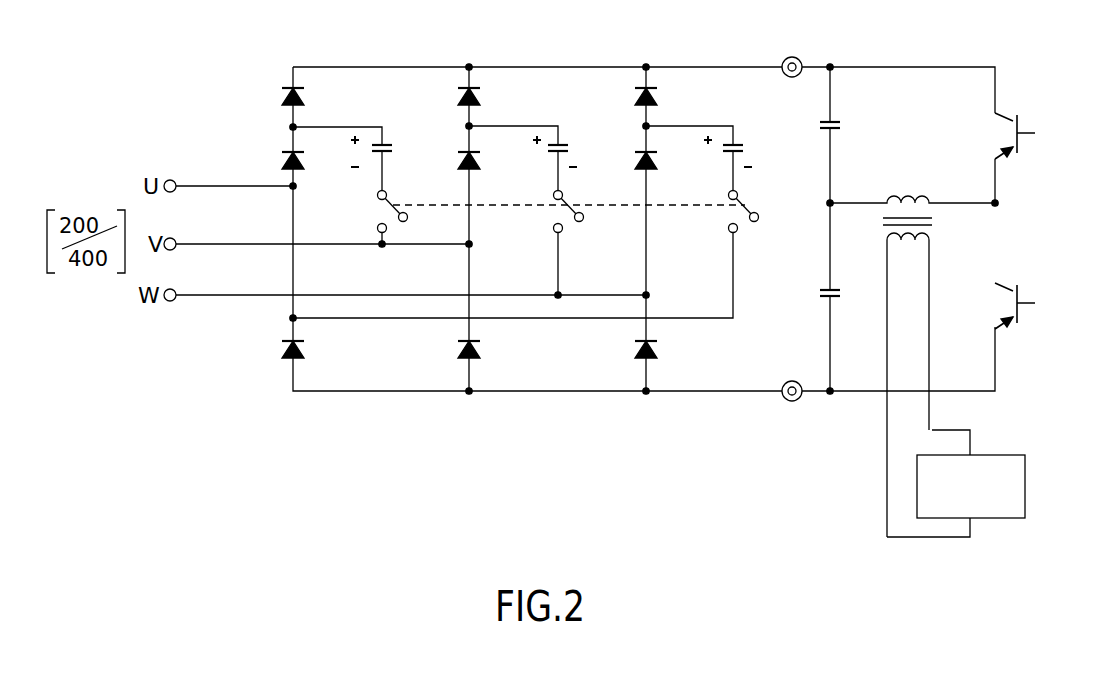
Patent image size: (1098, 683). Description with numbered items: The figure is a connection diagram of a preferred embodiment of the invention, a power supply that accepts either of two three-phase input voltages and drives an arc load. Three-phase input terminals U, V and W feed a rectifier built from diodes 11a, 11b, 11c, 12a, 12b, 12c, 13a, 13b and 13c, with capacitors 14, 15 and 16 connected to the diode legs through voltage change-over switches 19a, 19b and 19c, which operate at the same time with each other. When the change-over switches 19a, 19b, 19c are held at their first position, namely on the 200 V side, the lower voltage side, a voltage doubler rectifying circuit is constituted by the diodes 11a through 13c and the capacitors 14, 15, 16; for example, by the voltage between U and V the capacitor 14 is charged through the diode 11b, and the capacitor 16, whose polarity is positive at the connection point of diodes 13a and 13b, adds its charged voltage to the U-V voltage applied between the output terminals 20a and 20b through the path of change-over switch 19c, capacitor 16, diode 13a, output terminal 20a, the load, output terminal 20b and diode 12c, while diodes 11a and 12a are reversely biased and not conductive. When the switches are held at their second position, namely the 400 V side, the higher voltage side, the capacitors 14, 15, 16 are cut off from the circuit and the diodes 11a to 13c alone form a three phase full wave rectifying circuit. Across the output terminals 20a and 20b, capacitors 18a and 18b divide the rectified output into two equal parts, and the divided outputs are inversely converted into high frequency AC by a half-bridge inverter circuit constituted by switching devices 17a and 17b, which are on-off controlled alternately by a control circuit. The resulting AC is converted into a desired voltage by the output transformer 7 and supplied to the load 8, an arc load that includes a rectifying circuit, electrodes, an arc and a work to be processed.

The diode 11a is at (285, 100).
The diode 11b is at (285, 163).
The diode 11c is at (285, 353).
The diode 12a is at (478, 100).
The diode 12b is at (480, 165).
The diode 12c is at (460, 355).
The diode 13a is at (655, 100).
The diode 13b is at (657, 165).
The diode 13c is at (657, 352).
The capacitor 14 is at (393, 150).
The capacitor 15 is at (568, 150).
The capacitor 16 is at (743, 150).
The switching device 17a is at (1008, 116).
The switching device 17b is at (1008, 322).
The capacitor 18a is at (848, 128).
The capacitor 18b is at (822, 300).
The voltage change-over switch 19a is at (385, 231).
The voltage change-over switch 19b is at (562, 231).
The voltage change-over switch 19c is at (737, 230).
The output terminal 20a is at (800, 56).
The output terminal 20b is at (779, 402).
The output transformer 7 is at (935, 218).
The load 8 is at (995, 462).
The 200 V side 200 is at (341, 207).
The 400 V side 400 is at (416, 192).